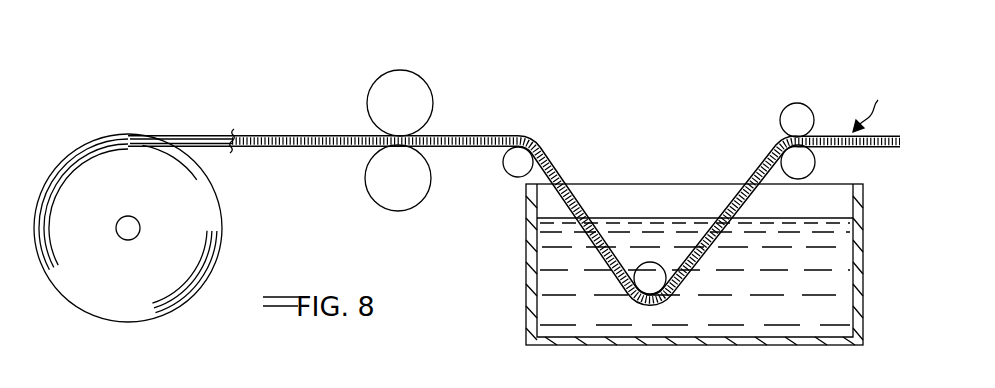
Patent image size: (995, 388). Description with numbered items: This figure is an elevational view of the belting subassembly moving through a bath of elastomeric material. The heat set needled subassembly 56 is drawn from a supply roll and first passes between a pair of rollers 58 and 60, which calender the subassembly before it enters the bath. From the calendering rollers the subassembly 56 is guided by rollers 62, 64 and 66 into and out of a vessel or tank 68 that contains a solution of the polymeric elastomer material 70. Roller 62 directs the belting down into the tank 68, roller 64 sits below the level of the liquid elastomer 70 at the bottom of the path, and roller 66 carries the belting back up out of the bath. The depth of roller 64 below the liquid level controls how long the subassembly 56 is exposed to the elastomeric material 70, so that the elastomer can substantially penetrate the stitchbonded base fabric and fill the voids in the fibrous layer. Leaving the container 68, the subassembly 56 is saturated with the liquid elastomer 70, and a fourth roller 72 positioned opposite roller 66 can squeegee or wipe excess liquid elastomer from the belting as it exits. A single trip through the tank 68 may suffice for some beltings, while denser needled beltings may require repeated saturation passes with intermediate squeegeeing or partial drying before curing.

The heat set needled subassembly 56 is at (204, 204).
The roller 58 is at (430, 102).
The roller 60 is at (386, 204).
The roller 62 is at (513, 176).
The roller 64 is at (662, 279).
The roller 66 is at (806, 163).
The tank 68 is at (863, 328).
The polymeric elastomer material 70 is at (842, 262).
The fourth roller 72 is at (787, 119).